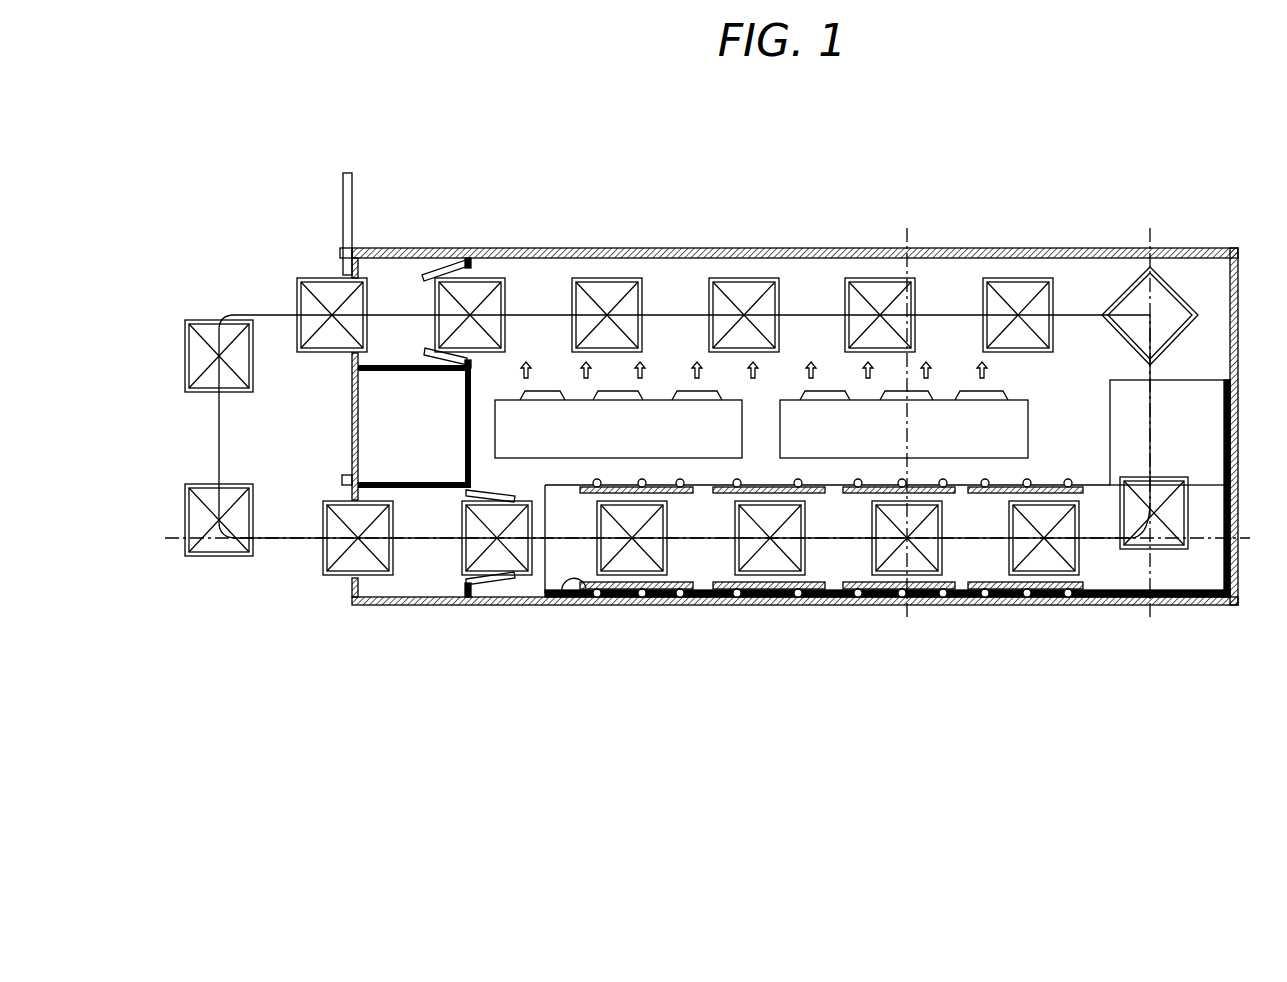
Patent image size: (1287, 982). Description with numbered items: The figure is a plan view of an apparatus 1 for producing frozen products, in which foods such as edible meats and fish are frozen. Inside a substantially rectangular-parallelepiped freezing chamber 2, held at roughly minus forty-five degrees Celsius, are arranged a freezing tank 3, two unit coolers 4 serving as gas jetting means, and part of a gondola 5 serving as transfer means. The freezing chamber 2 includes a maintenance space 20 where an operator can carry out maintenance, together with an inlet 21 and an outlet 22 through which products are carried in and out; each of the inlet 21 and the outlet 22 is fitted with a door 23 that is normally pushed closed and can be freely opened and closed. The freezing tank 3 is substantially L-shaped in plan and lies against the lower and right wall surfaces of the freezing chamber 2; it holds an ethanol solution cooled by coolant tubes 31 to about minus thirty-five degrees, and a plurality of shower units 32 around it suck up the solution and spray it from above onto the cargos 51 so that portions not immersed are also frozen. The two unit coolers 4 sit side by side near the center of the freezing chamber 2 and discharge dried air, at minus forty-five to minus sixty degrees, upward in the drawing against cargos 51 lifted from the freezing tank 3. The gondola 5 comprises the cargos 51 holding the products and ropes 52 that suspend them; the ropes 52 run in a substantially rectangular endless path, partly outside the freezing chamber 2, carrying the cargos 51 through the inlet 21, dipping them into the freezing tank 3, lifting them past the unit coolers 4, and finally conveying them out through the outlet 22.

The apparatus for producing frozen products 1 is at (1103, 102).
The freezing chamber 2 is at (1231, 286).
The freezing tank 3 is at (1200, 570).
The unit cooler 4 is at (655, 413).
The gondola 5 is at (560, 140).
The maintenance space 20 is at (375, 443).
The inlet 21 is at (463, 580).
The outlet 22 is at (476, 275).
The door 23 is at (442, 268).
The coolant tube 31 is at (563, 600).
The shower unit 32 is at (727, 485).
The cargo 51 is at (603, 278).
The rope 52 is at (547, 313).